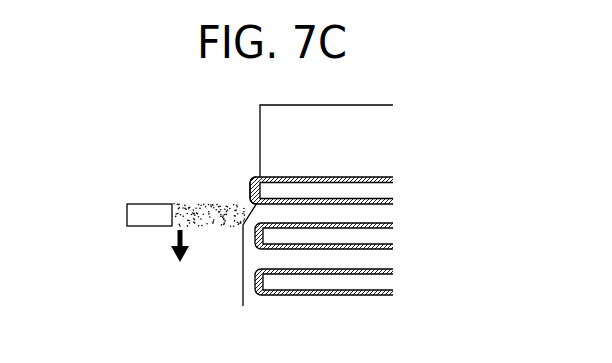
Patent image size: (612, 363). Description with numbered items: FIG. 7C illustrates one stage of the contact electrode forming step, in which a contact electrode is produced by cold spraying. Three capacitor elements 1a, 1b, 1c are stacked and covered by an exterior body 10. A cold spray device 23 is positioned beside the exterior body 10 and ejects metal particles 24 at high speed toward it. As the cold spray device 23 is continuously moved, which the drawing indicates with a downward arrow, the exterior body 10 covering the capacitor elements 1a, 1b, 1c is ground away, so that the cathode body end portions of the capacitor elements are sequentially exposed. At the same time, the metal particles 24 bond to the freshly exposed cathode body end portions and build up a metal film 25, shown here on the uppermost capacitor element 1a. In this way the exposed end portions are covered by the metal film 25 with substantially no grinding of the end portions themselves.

The exterior body 10 is at (375, 150).
The capacitor element 1a is at (375, 189).
The capacitor element 1b is at (375, 237).
The capacitor element 1c is at (375, 282).
The cold spray device 23 is at (143, 215).
The metal particles 24 is at (210, 211).
The metal film 25 is at (248, 185).